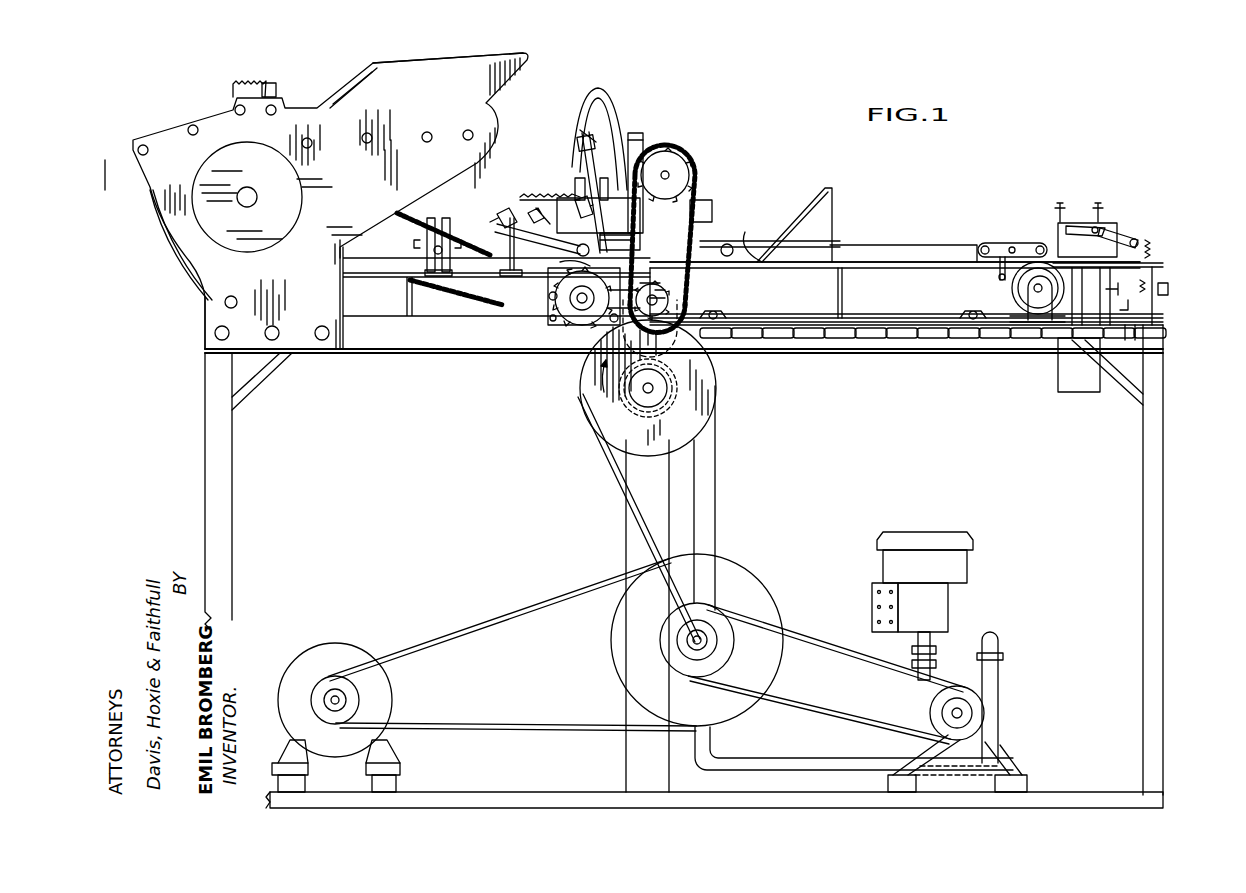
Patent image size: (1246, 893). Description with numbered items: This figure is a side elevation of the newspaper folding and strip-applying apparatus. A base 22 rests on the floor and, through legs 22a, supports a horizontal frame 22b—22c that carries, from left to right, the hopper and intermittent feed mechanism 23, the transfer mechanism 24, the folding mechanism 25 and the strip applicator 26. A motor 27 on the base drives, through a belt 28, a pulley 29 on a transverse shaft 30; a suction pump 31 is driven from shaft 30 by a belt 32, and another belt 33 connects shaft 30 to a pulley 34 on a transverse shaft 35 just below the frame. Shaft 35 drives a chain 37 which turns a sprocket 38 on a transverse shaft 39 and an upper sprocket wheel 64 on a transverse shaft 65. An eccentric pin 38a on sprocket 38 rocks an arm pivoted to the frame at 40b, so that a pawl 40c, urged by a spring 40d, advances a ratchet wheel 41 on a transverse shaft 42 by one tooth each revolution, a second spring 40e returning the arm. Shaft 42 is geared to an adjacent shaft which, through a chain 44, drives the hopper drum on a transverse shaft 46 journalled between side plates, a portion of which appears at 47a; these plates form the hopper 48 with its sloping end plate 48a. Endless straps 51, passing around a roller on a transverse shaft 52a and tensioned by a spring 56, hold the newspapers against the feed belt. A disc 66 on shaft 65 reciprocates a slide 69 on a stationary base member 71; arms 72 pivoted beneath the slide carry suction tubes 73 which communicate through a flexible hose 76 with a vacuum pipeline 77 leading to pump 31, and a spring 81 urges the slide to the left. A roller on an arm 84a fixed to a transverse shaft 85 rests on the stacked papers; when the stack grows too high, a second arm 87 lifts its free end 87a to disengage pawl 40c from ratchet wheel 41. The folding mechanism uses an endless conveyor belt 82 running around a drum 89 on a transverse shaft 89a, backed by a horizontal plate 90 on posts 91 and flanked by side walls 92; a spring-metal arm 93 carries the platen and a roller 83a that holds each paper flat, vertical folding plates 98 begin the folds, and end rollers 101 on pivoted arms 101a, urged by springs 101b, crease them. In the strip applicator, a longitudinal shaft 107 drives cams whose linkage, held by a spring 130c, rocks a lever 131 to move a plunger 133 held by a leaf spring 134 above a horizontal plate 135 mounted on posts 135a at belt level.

The base 22 is at (514, 791).
The legs 22a is at (206, 460).
The horizontal frame section 22b is at (391, 335).
The horizontal frame section 22c is at (836, 349).
The hopper and intermittent feed mechanism 23 is at (205, 103).
The transfer mechanism 24 is at (634, 118).
The folding mechanism 25 is at (851, 226).
The strip applicator 26 is at (1120, 218).
The motor 27 is at (326, 668).
The belt 28 is at (455, 650).
The pulley 29 is at (745, 580).
The transverse shaft 30 is at (692, 640).
The suction pump 31 is at (980, 690).
The belt 32 is at (826, 706).
The belt 33 is at (612, 470).
The pulley 34 is at (628, 388).
The transverse shaft 35 is at (648, 390).
The chain 37 is at (690, 162).
The sprocket wheel 38 is at (662, 283).
The eccentric pin 38a is at (666, 290).
The transverse shaft 39 is at (666, 298).
The pivot 40b is at (552, 290).
The pawl 40c is at (502, 263).
The spring 40d is at (505, 302).
The second spring 40e is at (590, 300).
The ratchet wheel 41 is at (600, 306).
The transverse shaft 42 is at (580, 303).
The chain 44 is at (420, 214).
The transverse shaft 46 is at (245, 195).
The plate edge 47a is at (205, 323).
The hopper 48 is at (386, 76).
The end plate 48a is at (343, 90).
The endless straps 51 is at (163, 245).
The transverse shaft 52a is at (225, 302).
The spring 56 is at (249, 80).
The upper sprocket wheel 64 is at (682, 168).
The transverse shaft 65 is at (670, 176).
The disc 66 is at (667, 150).
The slide 69 is at (583, 128).
The stationary base member 71 is at (703, 210).
The arms 72 is at (616, 240).
The suction tubes 73 is at (582, 180).
The flexible hose 76 is at (596, 90).
The vacuum pipeline 77 is at (705, 468).
The spring 81 is at (548, 192).
The conveyor belt 82 is at (933, 313).
The roller 83a is at (728, 244).
The arm 84a is at (544, 232).
The transverse shaft 85 is at (510, 216).
The second arm 87 is at (512, 232).
The free end 87a is at (648, 294).
The drum 89 is at (1018, 300).
The transverse shaft 89a is at (1040, 296).
The horizontal plate 90 is at (782, 270).
The posts 91 is at (840, 302).
The side walls 92 is at (918, 245).
The arm 93 is at (767, 240).
The vertical folding plates 98 is at (806, 208).
The end rollers 101 is at (1041, 246).
The arms 101a is at (1017, 248).
The spring 101b is at (1000, 265).
The longitudinal shaft 107 is at (1169, 290).
The spring 130c is at (1150, 254).
The lever 131 is at (1118, 234).
The plunger 133 is at (1070, 230).
The leaf spring 134 is at (1092, 224).
The horizontal plate 135 is at (1164, 263).
The posts 135a is at (1155, 312).